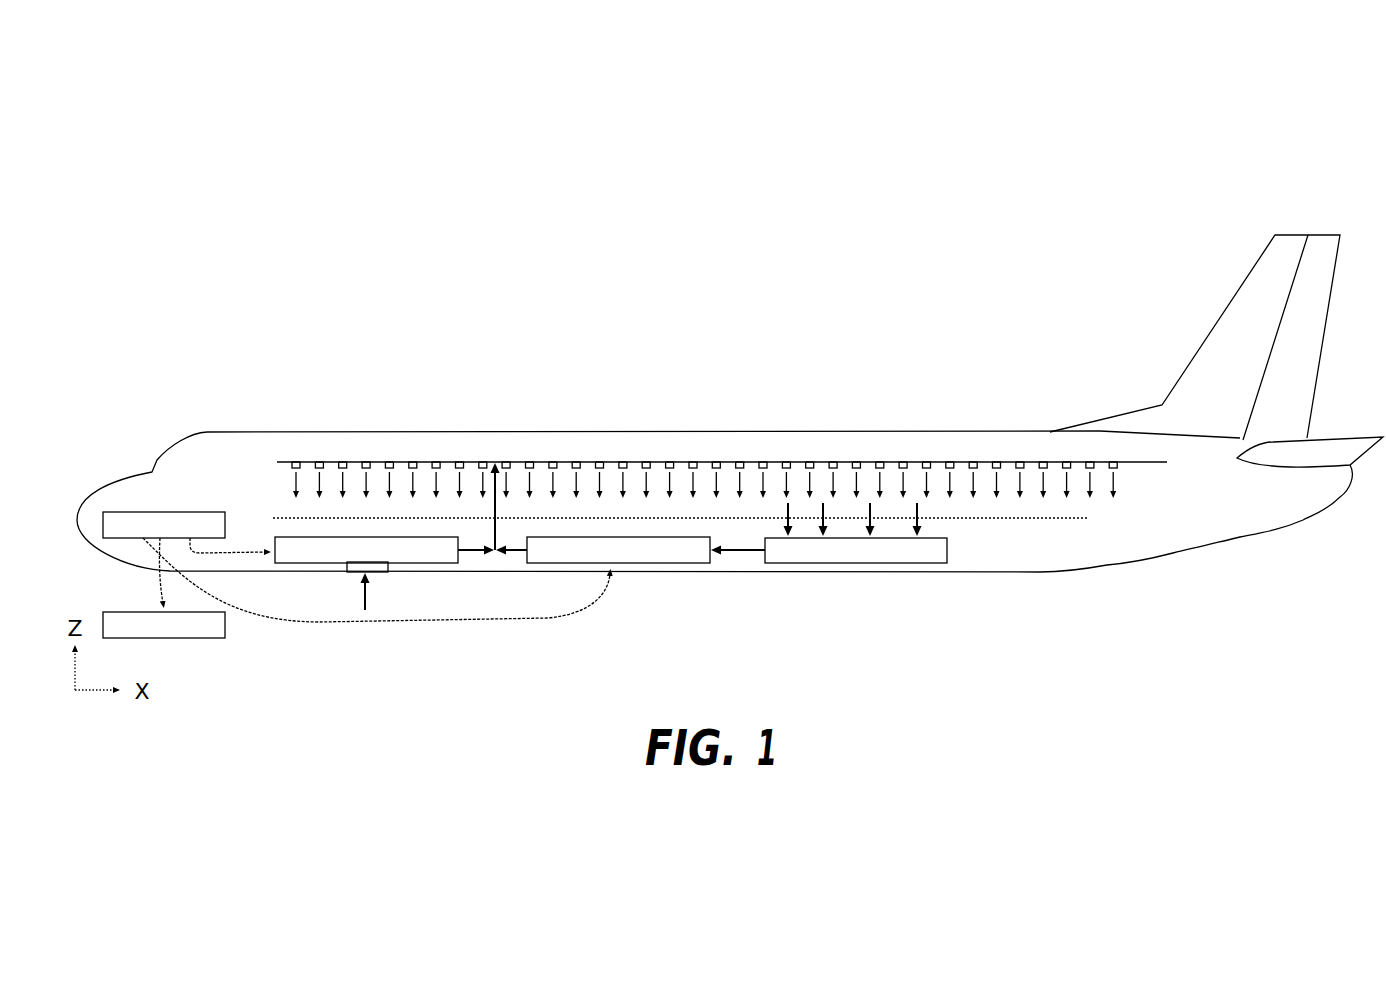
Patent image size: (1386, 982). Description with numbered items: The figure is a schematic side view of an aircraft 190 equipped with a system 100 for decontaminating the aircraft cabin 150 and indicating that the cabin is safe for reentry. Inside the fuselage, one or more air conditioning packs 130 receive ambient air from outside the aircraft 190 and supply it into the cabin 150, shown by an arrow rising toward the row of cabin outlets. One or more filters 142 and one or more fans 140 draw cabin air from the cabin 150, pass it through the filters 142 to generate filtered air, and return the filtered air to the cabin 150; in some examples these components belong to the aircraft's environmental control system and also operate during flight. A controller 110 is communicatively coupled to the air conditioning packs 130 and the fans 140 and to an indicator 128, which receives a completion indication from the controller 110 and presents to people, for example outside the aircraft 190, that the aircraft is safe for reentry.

The system 100 is at (838, 418).
The controller 110 is at (356, 567).
The indicator 128 is at (164, 625).
The air conditioning packs 130 is at (385, 540).
The fans 140 is at (606, 550).
The filters 142 is at (832, 533).
The aircraft cabin 150 is at (959, 470).
The aircraft 190 is at (1139, 227).